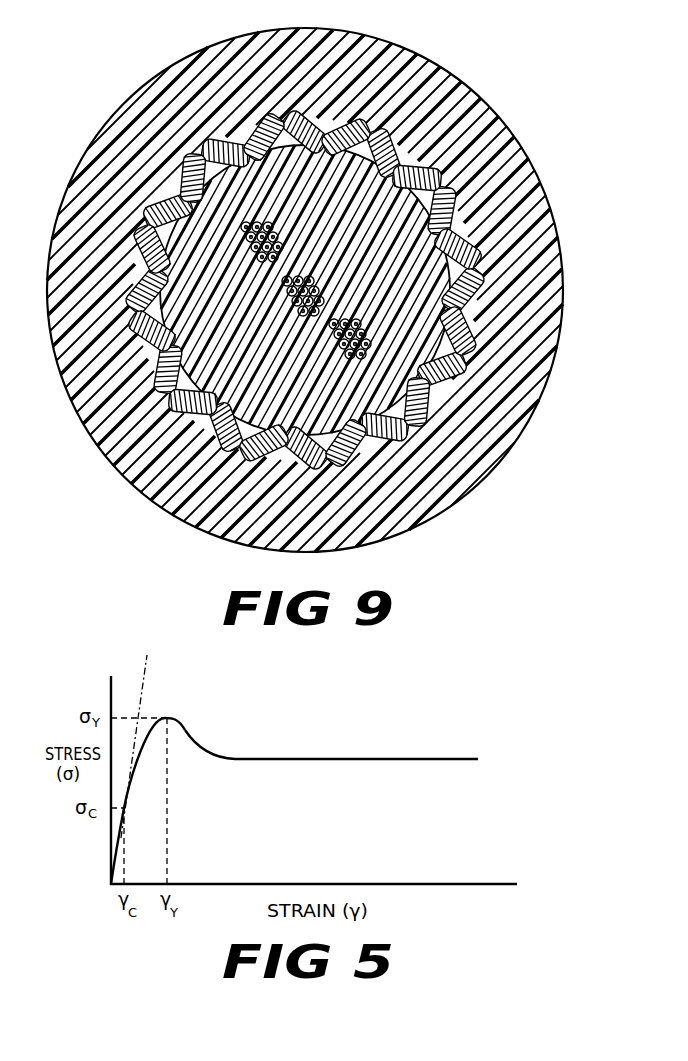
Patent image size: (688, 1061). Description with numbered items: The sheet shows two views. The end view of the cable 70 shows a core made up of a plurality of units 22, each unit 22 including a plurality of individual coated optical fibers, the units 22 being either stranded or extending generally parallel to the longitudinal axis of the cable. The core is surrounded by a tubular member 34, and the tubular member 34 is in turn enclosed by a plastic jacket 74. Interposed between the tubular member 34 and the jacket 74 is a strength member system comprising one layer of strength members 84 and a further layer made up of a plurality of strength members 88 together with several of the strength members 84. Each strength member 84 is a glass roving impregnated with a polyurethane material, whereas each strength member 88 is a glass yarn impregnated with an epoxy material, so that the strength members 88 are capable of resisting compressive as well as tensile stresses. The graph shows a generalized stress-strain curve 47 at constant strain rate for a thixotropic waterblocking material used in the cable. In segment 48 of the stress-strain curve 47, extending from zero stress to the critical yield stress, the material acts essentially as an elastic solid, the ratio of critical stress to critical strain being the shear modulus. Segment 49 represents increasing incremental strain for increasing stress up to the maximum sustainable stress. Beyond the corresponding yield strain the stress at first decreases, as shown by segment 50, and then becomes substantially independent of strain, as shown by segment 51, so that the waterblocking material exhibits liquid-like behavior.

In FIG. 9, the cable 70 is at (519, 130).
In FIG. 9, the plastic jacket 74 is at (227, 52).
In FIG. 9, the strength members 88 is at (198, 119).
In FIG. 9, the strength members 84 is at (427, 164).
In FIG. 9, the tubular member 34 is at (272, 348).
In FIG. 9, the units 22 is at (296, 238).
In FIG. 5, the stress-strain curve 47 is at (271, 769).
In FIG. 5, the segment 48 is at (116, 831).
In FIG. 5, the segment 49 is at (128, 764).
In FIG. 5, the segment 50 is at (191, 739).
In FIG. 5, the segment 51 is at (259, 763).